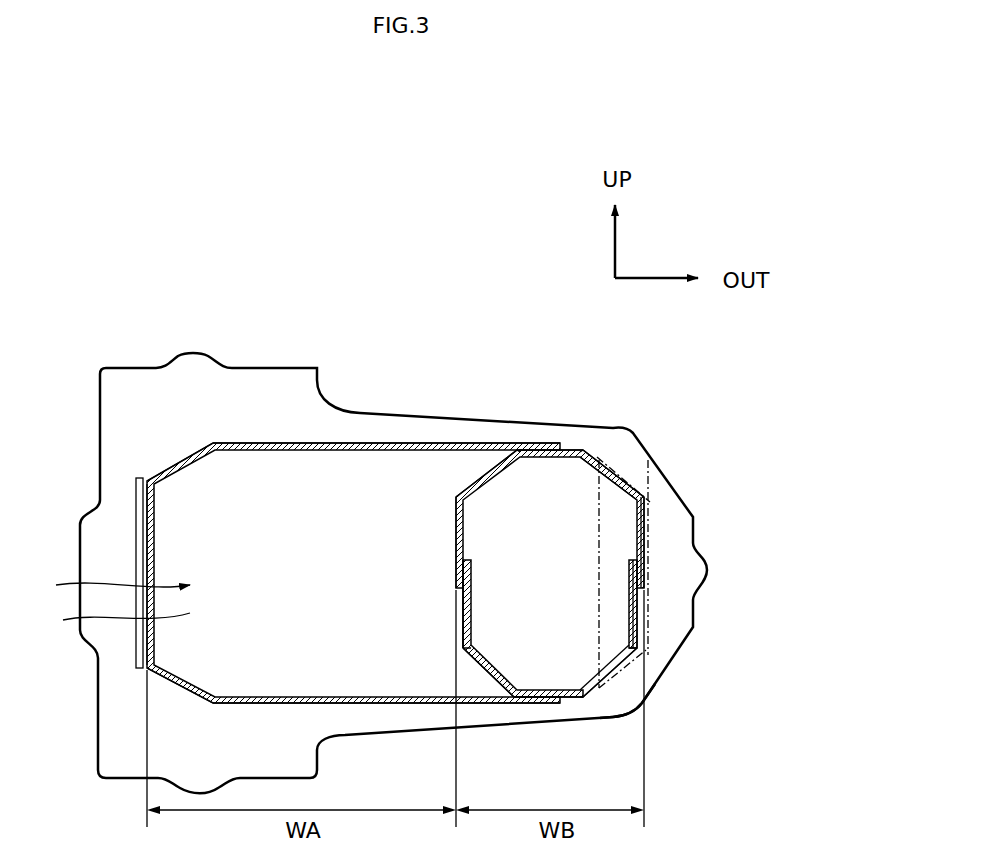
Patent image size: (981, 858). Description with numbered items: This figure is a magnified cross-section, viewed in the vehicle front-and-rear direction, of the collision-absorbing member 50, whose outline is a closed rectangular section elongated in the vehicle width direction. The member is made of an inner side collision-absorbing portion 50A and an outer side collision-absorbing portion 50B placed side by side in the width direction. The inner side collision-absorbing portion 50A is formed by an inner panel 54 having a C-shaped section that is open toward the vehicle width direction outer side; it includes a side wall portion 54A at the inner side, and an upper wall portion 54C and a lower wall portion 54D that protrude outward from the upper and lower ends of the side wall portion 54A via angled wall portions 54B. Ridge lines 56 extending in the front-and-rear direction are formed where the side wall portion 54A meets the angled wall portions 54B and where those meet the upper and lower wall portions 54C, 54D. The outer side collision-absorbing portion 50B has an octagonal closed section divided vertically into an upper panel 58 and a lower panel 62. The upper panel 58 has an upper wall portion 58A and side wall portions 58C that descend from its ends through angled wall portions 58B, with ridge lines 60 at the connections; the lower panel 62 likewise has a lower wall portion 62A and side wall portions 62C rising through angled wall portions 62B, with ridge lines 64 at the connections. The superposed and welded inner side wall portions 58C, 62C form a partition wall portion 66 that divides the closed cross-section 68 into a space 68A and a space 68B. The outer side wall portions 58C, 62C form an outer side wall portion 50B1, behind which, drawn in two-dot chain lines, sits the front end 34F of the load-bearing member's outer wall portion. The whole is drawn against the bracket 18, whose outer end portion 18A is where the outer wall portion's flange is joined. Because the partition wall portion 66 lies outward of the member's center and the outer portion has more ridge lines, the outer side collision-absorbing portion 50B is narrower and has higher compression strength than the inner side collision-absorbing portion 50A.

The bracket 18 is at (303, 368).
The end portion of the bracket 18A is at (633, 695).
The front end of the outer wall portion 34F is at (650, 517).
The collision-absorbing member 50 is at (415, 347).
The inner side collision-absorbing portion 50A is at (412, 443).
The outer side collision-absorbing portion 50B is at (572, 450).
The outer side wall portion 50B1 is at (768, 537).
The inner panel 54 is at (260, 443).
The side wall portion 54A is at (157, 540).
The angled wall portion 54B is at (200, 463).
The upper wall portion 54C is at (320, 450).
The lower wall portion 54D is at (313, 697).
The ridge lines 56 is at (140, 478).
The upper panel 58 is at (455, 525).
The upper wall portion 58A is at (550, 457).
The angled wall portion 58B is at (492, 482).
The side wall portions 58C is at (456, 560).
The ridge lines 60 is at (516, 450).
The lower panel 62 is at (636, 620).
The lower wall portion 62A is at (545, 690).
The angled wall portion 62B is at (490, 670).
The side wall portions 62C is at (463, 605).
The ridge lines 64 is at (463, 650).
The partition wall portion 66 is at (380, 547).
The closed cross-section 68 is at (107, 588).
The space 68A is at (103, 626).
The space 68B is at (580, 483).